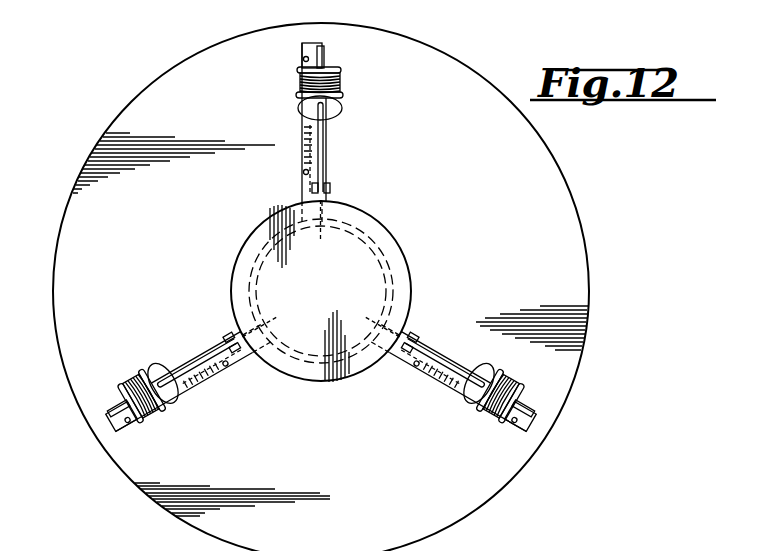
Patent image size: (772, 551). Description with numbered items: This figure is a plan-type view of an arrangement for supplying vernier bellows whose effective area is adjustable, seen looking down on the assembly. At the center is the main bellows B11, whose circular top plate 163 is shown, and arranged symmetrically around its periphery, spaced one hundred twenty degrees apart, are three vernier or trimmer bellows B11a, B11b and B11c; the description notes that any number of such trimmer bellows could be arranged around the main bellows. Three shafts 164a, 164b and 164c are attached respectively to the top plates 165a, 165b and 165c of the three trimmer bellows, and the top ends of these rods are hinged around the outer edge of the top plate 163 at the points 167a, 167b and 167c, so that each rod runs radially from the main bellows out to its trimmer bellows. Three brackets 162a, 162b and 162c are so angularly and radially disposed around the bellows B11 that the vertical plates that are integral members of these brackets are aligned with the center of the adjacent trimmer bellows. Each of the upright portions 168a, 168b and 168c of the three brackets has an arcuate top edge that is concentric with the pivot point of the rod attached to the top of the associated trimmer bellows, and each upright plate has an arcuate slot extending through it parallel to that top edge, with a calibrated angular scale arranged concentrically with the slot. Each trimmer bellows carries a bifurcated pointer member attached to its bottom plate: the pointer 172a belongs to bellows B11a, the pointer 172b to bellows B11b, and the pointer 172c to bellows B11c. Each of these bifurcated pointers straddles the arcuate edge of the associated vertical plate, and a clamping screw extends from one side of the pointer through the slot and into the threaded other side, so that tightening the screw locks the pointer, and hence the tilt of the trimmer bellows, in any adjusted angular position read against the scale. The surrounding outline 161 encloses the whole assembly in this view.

The circular housing plate 161 is at (512, 458).
The bracket 162a is at (193, 383).
The bracket 162b is at (425, 372).
The bracket 162c is at (318, 168).
The top plate of bellows B11 163 is at (398, 285).
The shaft 164a is at (207, 358).
The shaft 164b is at (453, 365).
The shaft 164c is at (321, 150).
The top plate 165a is at (163, 383).
The top plate 165b is at (479, 383).
The top plate 165c is at (338, 108).
The hinge point 167a is at (230, 330).
The hinge point 167b is at (407, 333).
The hinge point 167c is at (331, 193).
The upright portion 168a is at (117, 413).
The upright portion 168b is at (527, 417).
The upright portion 168c is at (322, 46).
The bifurcated pointer member 172a is at (127, 397).
The bifurcated pointer 172b is at (527, 402).
The bifurcated pointer 172c is at (327, 62).
The bellows B11 is at (388, 249).
The vernier bellows B11a is at (143, 370).
The vernier bellows B11b is at (503, 377).
The vernier bellows B11c is at (339, 83).